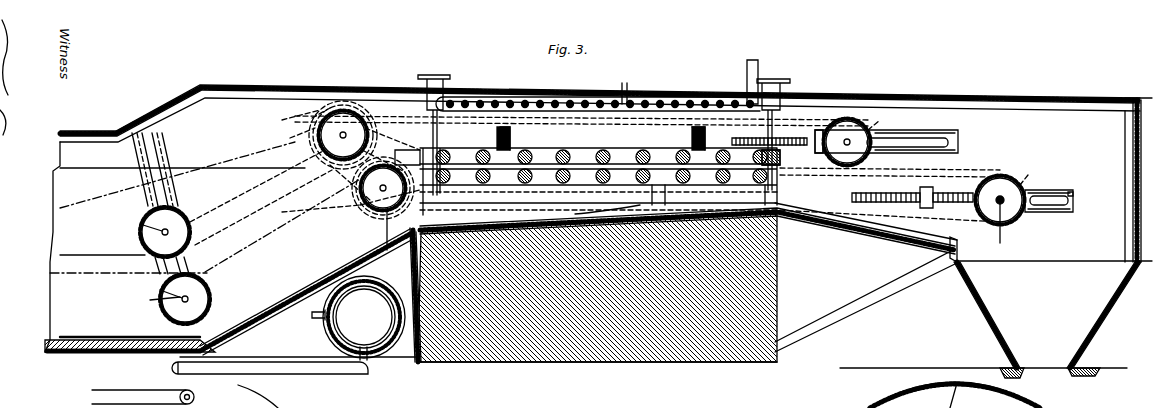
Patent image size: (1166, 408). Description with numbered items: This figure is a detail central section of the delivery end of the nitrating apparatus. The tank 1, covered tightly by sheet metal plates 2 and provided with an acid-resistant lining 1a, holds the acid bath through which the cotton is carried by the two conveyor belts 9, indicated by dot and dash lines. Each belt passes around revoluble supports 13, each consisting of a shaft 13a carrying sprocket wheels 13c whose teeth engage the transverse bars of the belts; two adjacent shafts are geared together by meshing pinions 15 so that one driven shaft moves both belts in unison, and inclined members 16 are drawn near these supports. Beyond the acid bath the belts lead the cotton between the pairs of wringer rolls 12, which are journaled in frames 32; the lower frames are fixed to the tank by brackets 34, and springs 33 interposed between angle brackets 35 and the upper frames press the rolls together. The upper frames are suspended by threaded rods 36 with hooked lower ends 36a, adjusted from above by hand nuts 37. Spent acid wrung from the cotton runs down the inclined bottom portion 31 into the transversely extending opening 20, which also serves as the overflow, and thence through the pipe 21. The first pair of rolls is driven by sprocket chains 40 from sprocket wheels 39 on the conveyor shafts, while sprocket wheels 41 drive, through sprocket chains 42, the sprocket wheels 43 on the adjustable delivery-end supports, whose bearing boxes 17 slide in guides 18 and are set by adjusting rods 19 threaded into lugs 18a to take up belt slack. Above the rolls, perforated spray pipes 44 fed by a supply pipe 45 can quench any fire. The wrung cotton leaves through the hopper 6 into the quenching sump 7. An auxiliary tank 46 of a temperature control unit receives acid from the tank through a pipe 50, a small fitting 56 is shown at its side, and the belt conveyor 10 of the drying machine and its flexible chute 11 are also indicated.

The tank 1 is at (1141, 178).
The lining 1a is at (290, 290).
The sheet metal plates 2 is at (76, 132).
The hopper 6 is at (988, 318).
The quenching sump 7 is at (983, 375).
The conveyor belts 9 is at (240, 165).
The belt conveyor 10 is at (135, 390).
The flexible chute 11 is at (278, 402).
The wringer rolls 12 is at (537, 150).
The revoluble supports 13 is at (190, 222).
The shaft 13a is at (560, 257).
The sprocket wheels 13c is at (624, 176).
The meshing pinions 15 is at (317, 164).
The inclined strut 16 is at (133, 158).
The bearing boxes 17 is at (905, 126).
The guides 18 is at (936, 137).
The lugs 18a is at (806, 130).
The adjusting rods 19 is at (876, 198).
The transversely extending opening 20 is at (403, 258).
The pipe 21 is at (415, 362).
The inclined bottom portion 31 is at (630, 210).
The frames 32 is at (598, 167).
The springs 33 is at (497, 136).
The brackets 34 is at (768, 196).
The angle brackets 35 is at (512, 130).
The threaded rods 36 is at (762, 135).
The hooked lower ends 36a is at (783, 155).
The hand nuts 37 is at (437, 78).
The sprocket wheels 39 is at (290, 183).
The sprocket chains 40 is at (415, 166).
The sprocket wheel 41 is at (308, 155).
The sprocket chains 42 is at (598, 150).
The sprocket wheels 43 is at (870, 118).
The spray pipes 44 is at (502, 100).
The supply pipe 45 is at (625, 96).
The auxiliary tank 46 is at (338, 340).
The pipe 50 is at (350, 375).
The pipe stub 56 is at (314, 318).